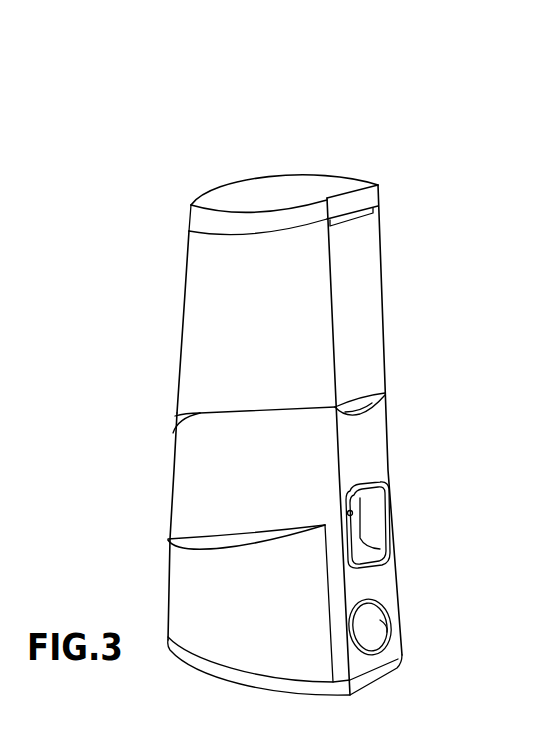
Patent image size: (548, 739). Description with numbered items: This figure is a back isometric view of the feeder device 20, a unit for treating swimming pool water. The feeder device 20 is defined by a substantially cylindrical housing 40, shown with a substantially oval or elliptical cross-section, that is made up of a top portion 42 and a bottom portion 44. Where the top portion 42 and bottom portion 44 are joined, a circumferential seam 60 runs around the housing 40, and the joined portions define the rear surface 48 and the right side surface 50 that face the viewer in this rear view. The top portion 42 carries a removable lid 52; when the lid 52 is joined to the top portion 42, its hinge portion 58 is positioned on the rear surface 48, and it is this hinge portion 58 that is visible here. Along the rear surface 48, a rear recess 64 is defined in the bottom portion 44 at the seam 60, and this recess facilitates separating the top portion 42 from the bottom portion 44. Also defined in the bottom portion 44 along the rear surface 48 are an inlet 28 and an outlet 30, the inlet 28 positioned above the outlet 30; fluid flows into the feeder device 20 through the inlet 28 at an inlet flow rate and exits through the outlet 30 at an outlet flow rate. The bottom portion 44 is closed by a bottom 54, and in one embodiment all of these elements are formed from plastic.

The feeder device 20 is at (370, 148).
The housing 40 is at (404, 192).
The removable lid 52 is at (297, 175).
The hinge portion 58 is at (352, 219).
The right side surface 50 is at (186, 293).
The top portion 42 is at (384, 306).
The rear surface 48 is at (368, 350).
The rear recess 64 is at (368, 402).
The circumferential seam 60 is at (177, 436).
The bottom portion 44 is at (171, 500).
The inlet 28 is at (373, 542).
The outlet 30 is at (379, 622).
The bottom 54 is at (200, 678).